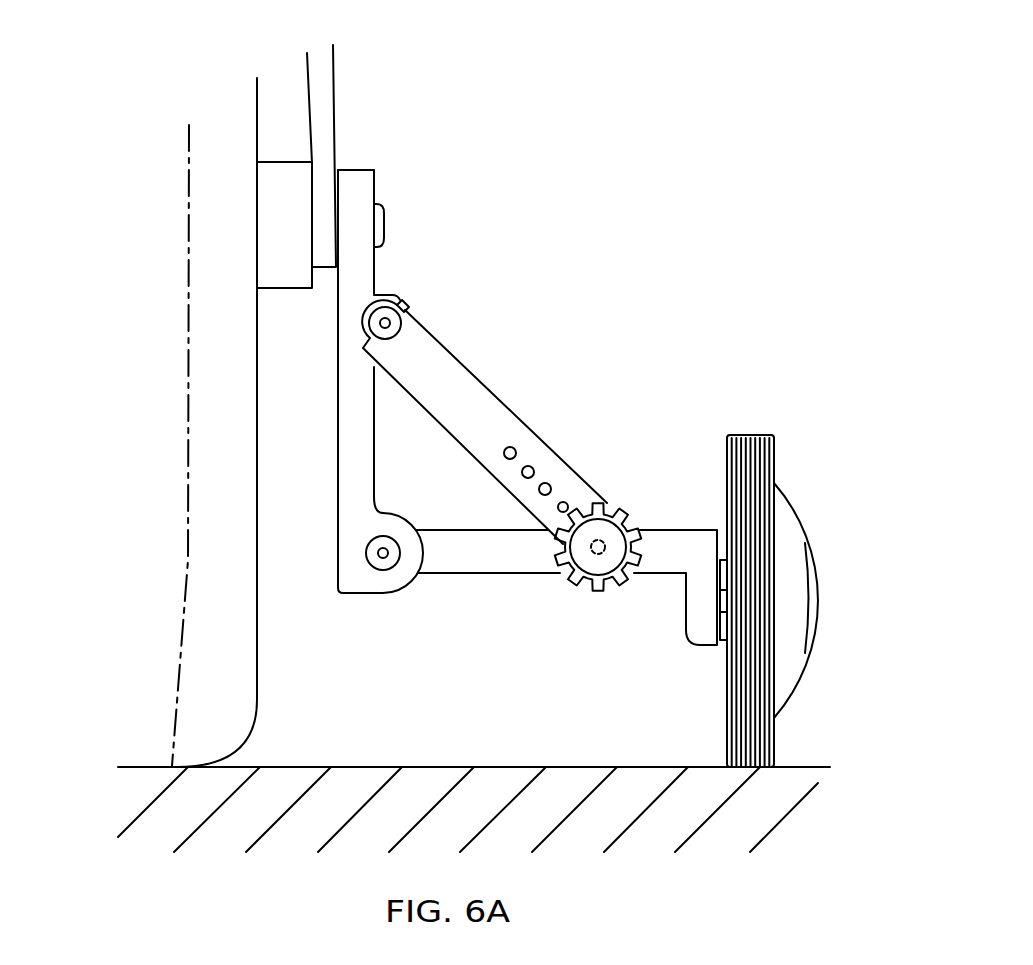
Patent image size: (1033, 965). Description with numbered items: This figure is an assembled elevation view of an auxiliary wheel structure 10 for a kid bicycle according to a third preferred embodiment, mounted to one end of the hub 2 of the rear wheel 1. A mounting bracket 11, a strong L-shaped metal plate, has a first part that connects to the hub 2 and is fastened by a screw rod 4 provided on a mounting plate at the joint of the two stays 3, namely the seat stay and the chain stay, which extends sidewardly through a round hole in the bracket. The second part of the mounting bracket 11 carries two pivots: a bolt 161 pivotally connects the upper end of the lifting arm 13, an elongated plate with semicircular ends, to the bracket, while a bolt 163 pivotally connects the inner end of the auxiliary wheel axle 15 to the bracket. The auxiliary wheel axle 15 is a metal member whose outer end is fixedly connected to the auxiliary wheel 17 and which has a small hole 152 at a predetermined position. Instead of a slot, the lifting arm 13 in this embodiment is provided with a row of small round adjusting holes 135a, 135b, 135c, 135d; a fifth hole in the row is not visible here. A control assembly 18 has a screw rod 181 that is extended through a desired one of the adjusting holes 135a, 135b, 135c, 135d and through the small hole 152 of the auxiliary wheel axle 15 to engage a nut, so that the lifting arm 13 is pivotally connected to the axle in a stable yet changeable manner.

The rear wheel 1 is at (210, 494).
The hub 2 is at (269, 208).
The stays 3 is at (327, 97).
The screw rod 4 is at (377, 217).
The auxiliary wheel structure 10 is at (714, 256).
The mounting bracket 11 is at (348, 493).
The lifting arm 13 is at (440, 370).
The auxiliary wheel axle 15 is at (495, 567).
The auxiliary wheel 17 is at (760, 437).
The control assembly 18 is at (648, 509).
The adjusting hole 135a is at (511, 447).
The adjusting hole 135b is at (533, 466).
The adjusting hole 135c is at (550, 486).
The adjusting hole 135d is at (568, 504).
The small hole 152 is at (593, 555).
The bolt 161 is at (403, 304).
The bolt 163 is at (380, 567).
The screw rod 181 is at (598, 567).